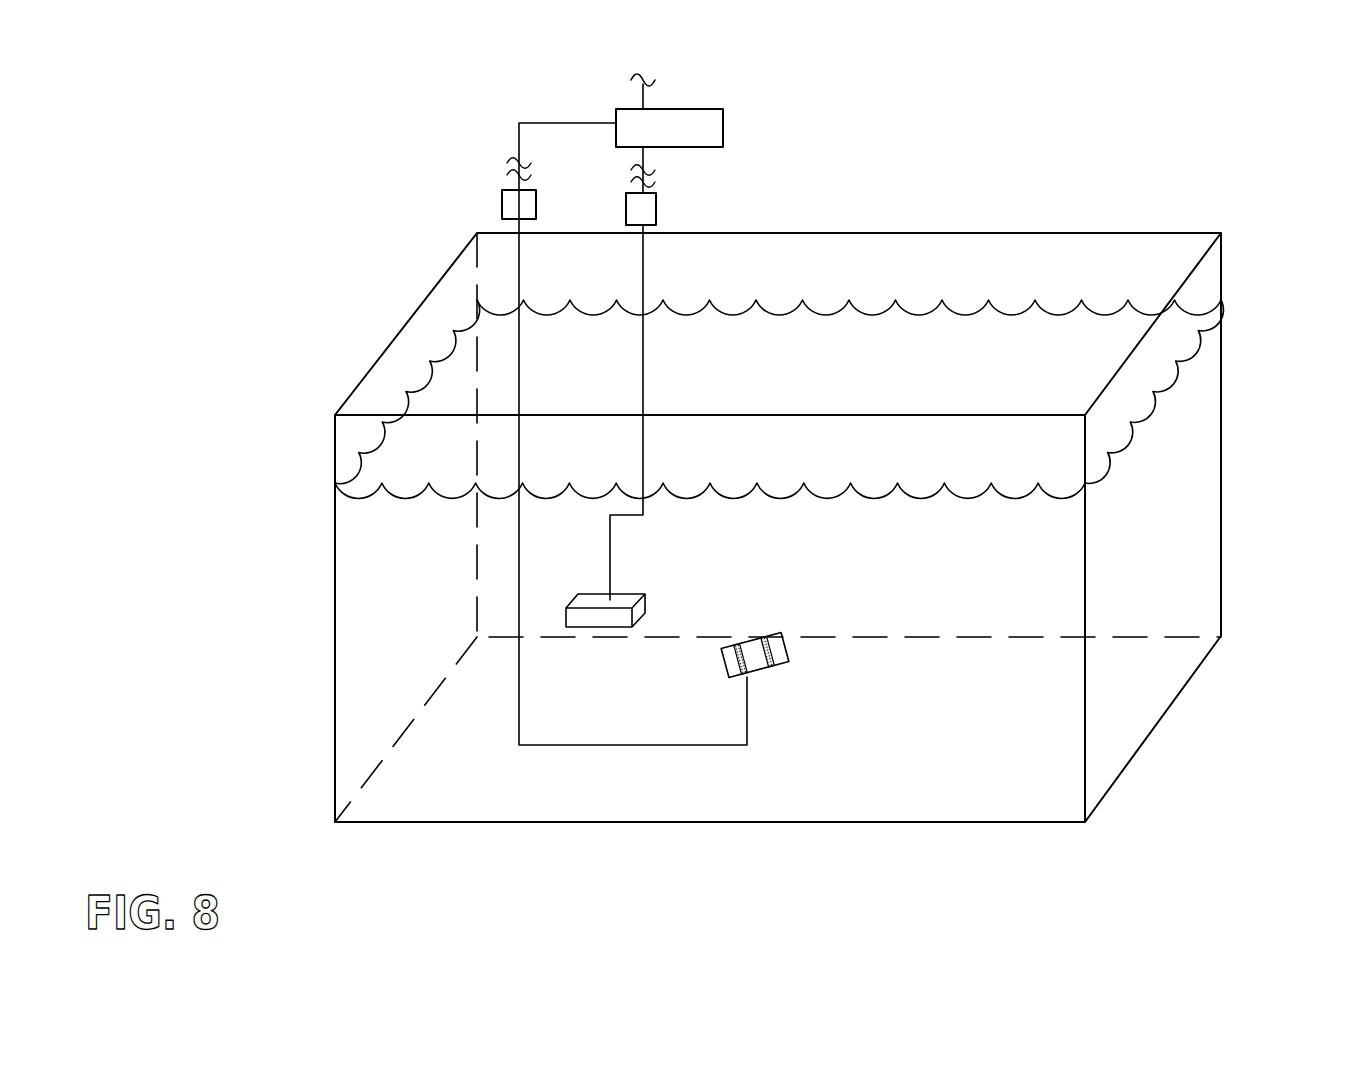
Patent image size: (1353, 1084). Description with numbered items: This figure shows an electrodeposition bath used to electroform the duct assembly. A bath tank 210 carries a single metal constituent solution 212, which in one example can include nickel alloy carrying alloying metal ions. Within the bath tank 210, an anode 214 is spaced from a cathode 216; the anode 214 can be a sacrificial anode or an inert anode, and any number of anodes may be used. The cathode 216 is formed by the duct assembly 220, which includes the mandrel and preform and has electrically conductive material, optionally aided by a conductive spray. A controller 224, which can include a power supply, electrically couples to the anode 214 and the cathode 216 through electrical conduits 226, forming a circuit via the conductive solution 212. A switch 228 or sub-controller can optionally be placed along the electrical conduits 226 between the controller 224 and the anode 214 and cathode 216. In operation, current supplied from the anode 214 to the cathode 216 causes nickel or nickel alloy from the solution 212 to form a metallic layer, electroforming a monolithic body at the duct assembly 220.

The bath tank 210 is at (335, 583).
The single metal constituent solution 212 is at (1193, 366).
The anode 214 is at (627, 598).
The cathode 216 is at (747, 640).
The duct assembly 220 is at (757, 661).
The controller 224 is at (703, 109).
The electrical conduits 226 is at (519, 270).
The switch 228 is at (502, 203).